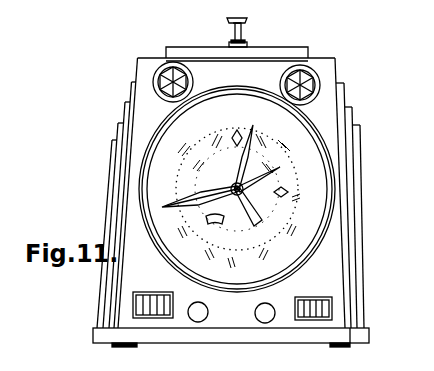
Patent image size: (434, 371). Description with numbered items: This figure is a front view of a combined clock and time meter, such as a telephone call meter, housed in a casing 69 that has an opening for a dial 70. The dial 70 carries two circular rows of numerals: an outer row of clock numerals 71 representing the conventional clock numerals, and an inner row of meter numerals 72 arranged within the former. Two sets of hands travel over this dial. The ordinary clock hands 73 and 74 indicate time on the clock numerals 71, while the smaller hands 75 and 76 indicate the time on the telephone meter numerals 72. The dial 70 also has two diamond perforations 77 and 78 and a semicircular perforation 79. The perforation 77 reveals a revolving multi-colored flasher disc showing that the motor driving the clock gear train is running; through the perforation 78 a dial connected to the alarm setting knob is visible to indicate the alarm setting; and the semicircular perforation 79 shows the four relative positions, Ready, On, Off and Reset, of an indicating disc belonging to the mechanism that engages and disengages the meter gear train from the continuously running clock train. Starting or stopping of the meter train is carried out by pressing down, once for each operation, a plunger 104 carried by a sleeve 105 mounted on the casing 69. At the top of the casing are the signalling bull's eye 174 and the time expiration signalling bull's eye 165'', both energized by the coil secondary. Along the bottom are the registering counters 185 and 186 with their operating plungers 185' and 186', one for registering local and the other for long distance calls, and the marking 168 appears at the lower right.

The casing 69 is at (130, 143).
The dial 70 is at (150, 183).
The clock numerals 71 is at (172, 198).
The meter numerals 72 is at (188, 176).
The clock hand 73 is at (160, 217).
The clock hand 74 is at (253, 127).
The meter hand 75 is at (284, 168).
The meter hand 76 is at (300, 209).
The diamond perforation 77 is at (200, 146).
The diamond perforation 78 is at (290, 186).
The semicircular perforation 79 is at (207, 222).
The plunger 104 is at (238, 17).
The sleeve 105 is at (248, 45).
The bull's eye 174 is at (156, 72).
The time expiration signalling bull's eye 165'' is at (331, 80).
The registering counter 185 is at (141, 329).
The operating plunger 185' is at (189, 334).
The registering counter 186 is at (313, 333).
The operating plunger 186' is at (264, 335).
The sheet numeral 168 is at (405, 361).